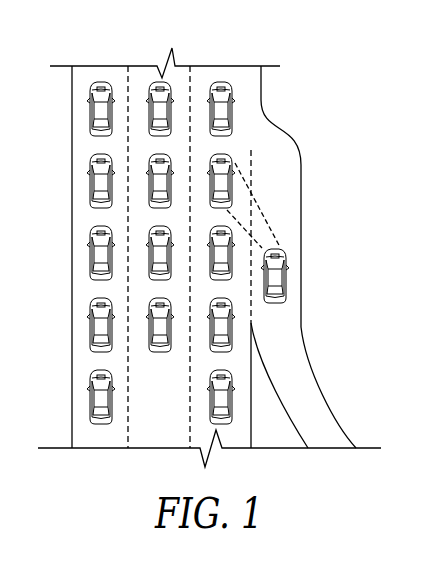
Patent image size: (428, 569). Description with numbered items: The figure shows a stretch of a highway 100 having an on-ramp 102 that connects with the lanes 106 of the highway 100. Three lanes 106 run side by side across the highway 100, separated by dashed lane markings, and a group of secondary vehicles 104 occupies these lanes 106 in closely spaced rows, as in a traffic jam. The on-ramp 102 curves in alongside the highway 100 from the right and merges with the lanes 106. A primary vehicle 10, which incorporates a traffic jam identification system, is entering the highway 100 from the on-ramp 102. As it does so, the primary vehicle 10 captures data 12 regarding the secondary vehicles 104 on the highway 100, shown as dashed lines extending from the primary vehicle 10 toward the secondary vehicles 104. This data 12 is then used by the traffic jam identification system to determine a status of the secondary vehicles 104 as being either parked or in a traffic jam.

The highway 100 is at (225, 270).
The primary vehicle 10 is at (301, 278).
The data 12 is at (261, 205).
The on-ramp 102 is at (315, 408).
The secondary vehicles 104 is at (227, 68).
The lanes 106 is at (203, 437).